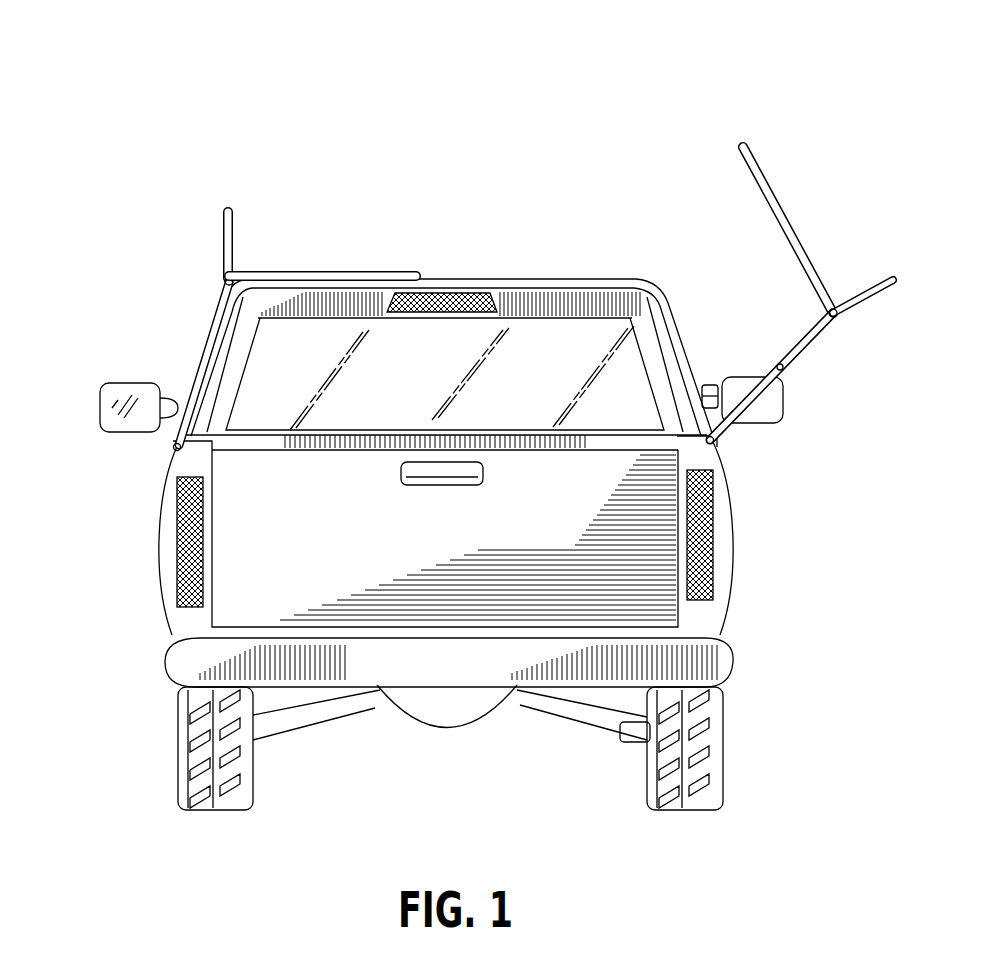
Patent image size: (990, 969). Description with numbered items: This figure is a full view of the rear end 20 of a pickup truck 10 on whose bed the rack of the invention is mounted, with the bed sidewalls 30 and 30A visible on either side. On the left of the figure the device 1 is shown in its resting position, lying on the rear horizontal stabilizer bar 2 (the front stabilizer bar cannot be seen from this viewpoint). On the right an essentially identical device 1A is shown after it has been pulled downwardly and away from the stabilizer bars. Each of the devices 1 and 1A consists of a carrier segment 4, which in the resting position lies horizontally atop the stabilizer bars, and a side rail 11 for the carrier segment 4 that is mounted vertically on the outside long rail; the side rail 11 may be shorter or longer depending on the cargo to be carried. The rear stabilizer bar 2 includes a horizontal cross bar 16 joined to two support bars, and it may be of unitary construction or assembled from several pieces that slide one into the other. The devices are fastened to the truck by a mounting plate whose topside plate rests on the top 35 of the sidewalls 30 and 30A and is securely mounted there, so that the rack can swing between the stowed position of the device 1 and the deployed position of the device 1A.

The device 1 is at (247, 265).
The device 1A is at (834, 237).
The rear horizontal stabilizer bar 2 is at (257, 300).
The carrier segment 4 is at (313, 272).
The pickup truck 10 is at (443, 432).
The side rail 11 is at (895, 290).
The horizontal cross bar 16 is at (502, 284).
The rear end 20 is at (232, 606).
The sidewall 30 is at (163, 541).
The sidewall 30A is at (722, 527).
The top 35 is at (712, 398).